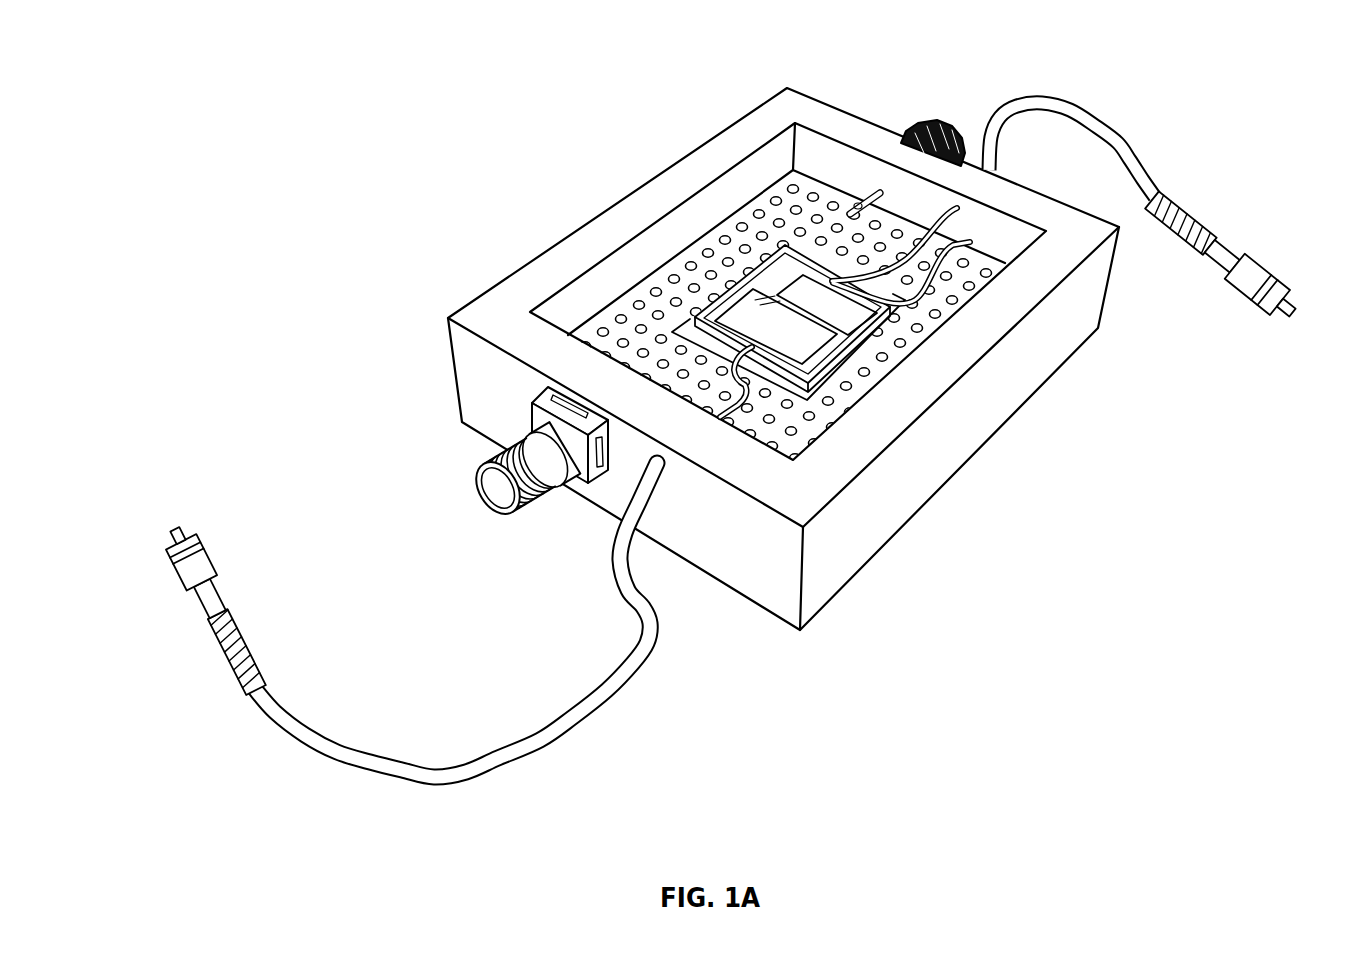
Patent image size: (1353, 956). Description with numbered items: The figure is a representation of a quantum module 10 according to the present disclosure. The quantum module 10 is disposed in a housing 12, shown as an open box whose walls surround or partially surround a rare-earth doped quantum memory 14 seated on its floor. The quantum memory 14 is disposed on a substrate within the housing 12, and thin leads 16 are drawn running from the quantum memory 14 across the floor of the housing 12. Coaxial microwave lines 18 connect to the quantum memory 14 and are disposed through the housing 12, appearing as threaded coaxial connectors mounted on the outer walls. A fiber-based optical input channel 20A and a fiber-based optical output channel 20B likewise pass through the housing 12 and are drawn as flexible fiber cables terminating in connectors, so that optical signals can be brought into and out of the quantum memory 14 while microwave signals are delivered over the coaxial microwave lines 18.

The quantum module 10 is at (494, 78).
The housing 12 is at (770, 111).
The rare-earth doped quantum memory 14 is at (763, 313).
The wires 16 is at (927, 300).
The coaxial microwave lines 18 is at (934, 124).
The fiber-based optical input channel 20A is at (441, 788).
The fiber-based optical output channel 20B is at (1216, 236).